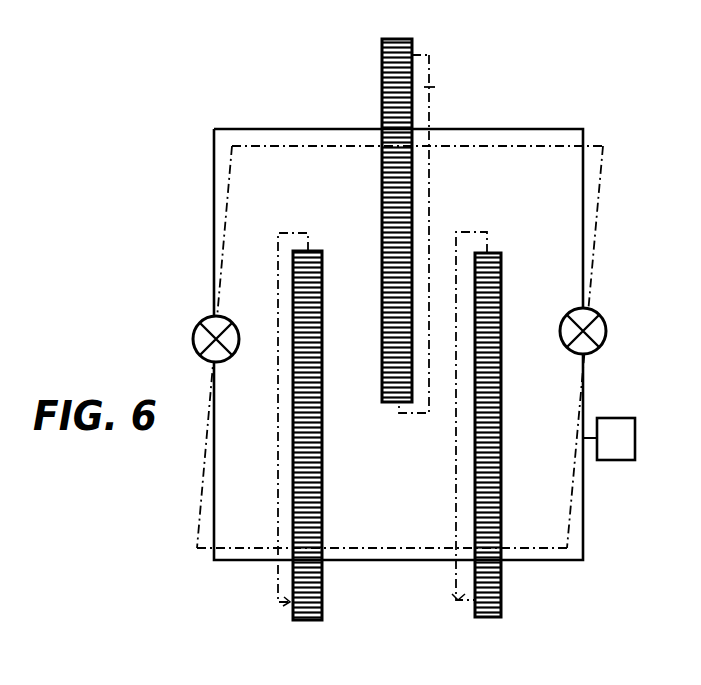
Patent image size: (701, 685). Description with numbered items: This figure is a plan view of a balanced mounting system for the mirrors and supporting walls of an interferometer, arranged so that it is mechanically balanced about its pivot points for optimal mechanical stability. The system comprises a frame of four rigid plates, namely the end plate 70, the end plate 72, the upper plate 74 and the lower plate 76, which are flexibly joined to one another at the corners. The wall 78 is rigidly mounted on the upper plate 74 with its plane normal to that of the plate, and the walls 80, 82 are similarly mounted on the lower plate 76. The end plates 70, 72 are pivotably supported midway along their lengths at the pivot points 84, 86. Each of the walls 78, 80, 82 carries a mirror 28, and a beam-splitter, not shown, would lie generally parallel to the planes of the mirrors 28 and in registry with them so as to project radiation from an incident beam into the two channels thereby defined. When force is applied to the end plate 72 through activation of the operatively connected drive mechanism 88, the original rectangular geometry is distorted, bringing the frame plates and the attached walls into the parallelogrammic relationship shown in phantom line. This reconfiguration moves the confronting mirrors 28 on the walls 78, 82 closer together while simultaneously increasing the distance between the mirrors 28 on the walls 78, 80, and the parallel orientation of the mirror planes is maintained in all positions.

The mirrors 28 is at (386, 206).
The end plate 70 is at (213, 173).
The end plate 72 is at (596, 185).
The upper plate 74 is at (320, 128).
The lower plate 76 is at (230, 548).
The wall 78 is at (382, 74).
The wall 80 is at (278, 600).
The wall 82 is at (456, 600).
The pivot point 84 is at (193, 340).
The pivot point 86 is at (606, 328).
The drive mechanism 88 is at (615, 425).